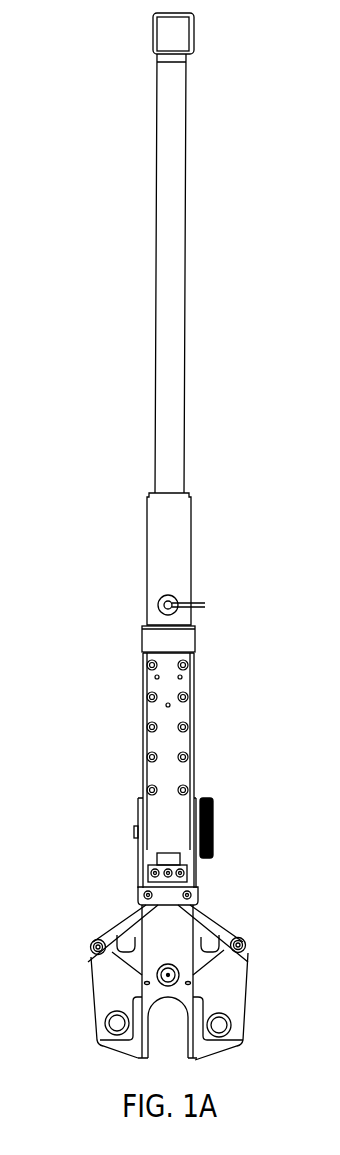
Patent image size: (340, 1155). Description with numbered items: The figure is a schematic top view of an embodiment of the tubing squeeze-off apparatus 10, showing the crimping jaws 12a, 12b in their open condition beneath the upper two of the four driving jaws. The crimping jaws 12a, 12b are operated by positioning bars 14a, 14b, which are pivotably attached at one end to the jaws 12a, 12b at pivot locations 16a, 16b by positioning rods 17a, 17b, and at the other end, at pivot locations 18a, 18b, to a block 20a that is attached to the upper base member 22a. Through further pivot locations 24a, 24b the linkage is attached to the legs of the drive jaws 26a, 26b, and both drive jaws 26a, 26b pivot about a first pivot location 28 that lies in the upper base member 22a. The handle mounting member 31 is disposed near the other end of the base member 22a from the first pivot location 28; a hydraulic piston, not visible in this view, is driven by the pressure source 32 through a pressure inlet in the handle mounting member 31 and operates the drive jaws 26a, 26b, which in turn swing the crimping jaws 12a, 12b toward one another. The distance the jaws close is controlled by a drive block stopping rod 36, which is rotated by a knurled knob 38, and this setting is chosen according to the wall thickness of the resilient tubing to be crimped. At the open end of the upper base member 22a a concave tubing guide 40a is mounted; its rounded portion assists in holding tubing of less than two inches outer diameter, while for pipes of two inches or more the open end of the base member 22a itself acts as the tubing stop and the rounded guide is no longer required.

The squeeze-off apparatus 10 is at (188, 279).
The handle mounting member 31 is at (181, 555).
The pressure source 32 is at (237, 615).
The upper base member 22a is at (192, 833).
The drive block stopping rod 36 is at (133, 833).
The knurled knob 38 is at (213, 797).
The block 20a is at (143, 882).
The pivot location 18a is at (140, 896).
The pivot location 18b is at (189, 893).
The positioning bar 14a is at (123, 925).
The positioning bar 14b is at (205, 897).
The pivot location 16a is at (93, 947).
The pivot location 16b is at (238, 937).
The positioning rod 17a is at (93, 958).
The positioning rod 17b is at (242, 934).
The drive jaw 26a is at (137, 972).
The drive jaw 26b is at (215, 998).
The crimping jaw 12a is at (101, 997).
The crimping jaw 12b is at (230, 982).
The pivot location 24a is at (117, 1027).
The pivot location 24b is at (219, 1027).
The first pivot location 28 is at (170, 974).
The concave tubing guide 40a is at (155, 1013).